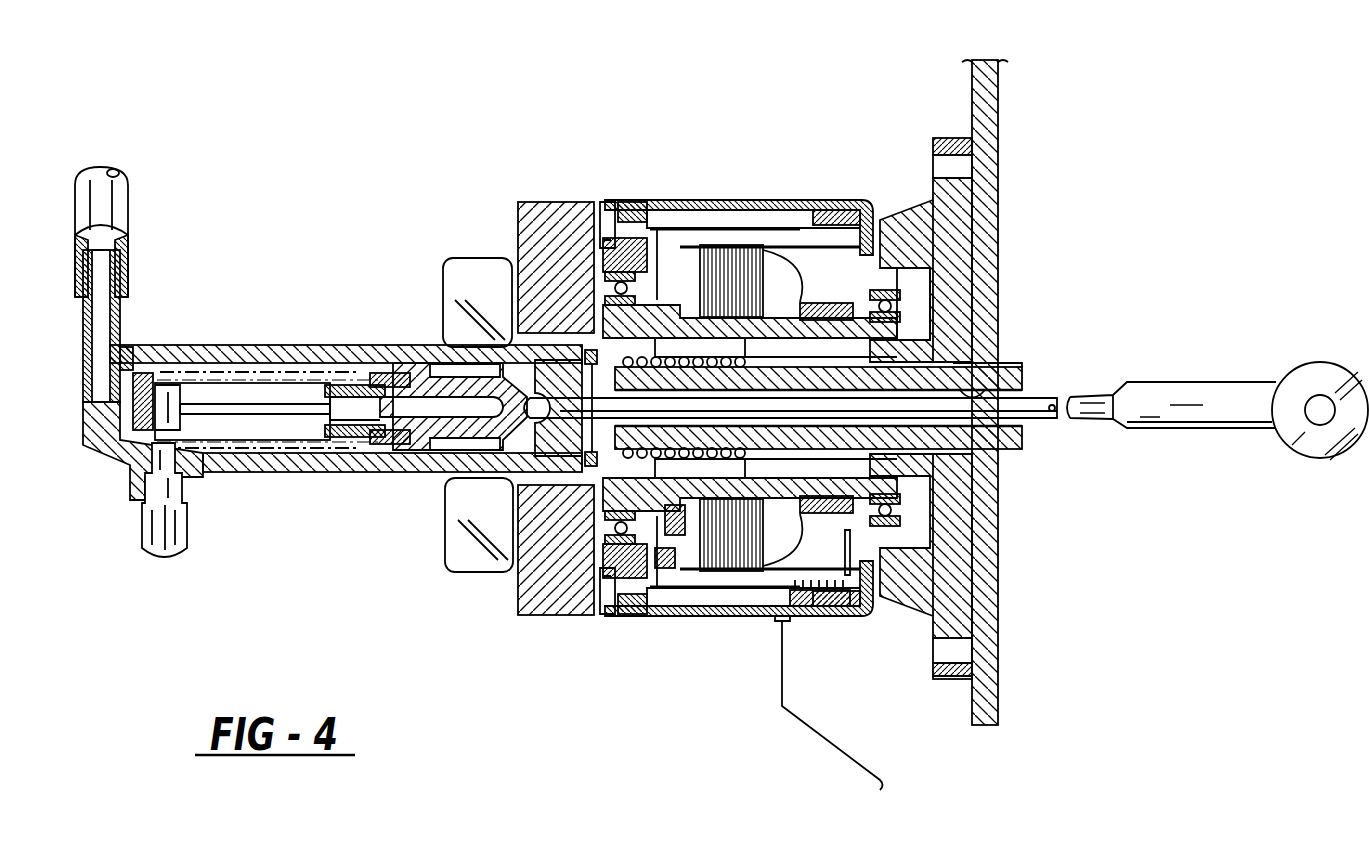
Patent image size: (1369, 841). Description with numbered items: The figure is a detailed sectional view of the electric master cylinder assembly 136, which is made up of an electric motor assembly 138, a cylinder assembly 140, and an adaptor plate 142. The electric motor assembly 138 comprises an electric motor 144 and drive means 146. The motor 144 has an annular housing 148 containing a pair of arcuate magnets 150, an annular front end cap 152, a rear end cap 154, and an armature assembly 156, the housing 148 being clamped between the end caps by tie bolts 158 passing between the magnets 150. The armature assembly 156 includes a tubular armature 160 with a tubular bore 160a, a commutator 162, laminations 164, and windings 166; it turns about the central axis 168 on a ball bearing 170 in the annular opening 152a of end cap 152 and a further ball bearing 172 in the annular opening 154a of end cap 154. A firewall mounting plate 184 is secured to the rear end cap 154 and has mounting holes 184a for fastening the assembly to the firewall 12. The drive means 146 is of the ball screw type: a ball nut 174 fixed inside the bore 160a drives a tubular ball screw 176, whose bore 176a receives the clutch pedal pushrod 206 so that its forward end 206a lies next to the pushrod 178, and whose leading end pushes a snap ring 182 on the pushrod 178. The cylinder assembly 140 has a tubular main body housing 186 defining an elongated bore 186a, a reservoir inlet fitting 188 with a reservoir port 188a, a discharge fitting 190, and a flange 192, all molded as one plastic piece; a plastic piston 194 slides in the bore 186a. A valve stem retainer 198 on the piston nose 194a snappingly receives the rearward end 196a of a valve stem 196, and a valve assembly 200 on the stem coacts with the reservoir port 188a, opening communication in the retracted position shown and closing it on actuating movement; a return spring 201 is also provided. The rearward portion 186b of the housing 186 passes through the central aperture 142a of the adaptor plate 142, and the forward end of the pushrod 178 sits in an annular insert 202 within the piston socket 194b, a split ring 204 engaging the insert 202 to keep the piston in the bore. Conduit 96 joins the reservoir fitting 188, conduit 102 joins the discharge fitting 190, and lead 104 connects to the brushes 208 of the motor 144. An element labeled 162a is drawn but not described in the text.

The firewall 12 is at (1000, 115).
The conduit 96 is at (125, 195).
The conduit 102 is at (150, 537).
The lead 104 is at (837, 757).
The master cylinder assembly 136 is at (583, 152).
The electric motor assembly 138 is at (740, 128).
The cylinder assembly 140 is at (330, 245).
The adaptor plate 142 is at (518, 202).
The central aperture 142a is at (560, 450).
The electric motor 144 is at (648, 198).
The drive means 146 is at (701, 338).
The annular housing 148 is at (787, 200).
The arcuate magnets 150 is at (737, 613).
The annular front end cap 152 is at (640, 600).
The annular opening 152a is at (662, 612).
The rear end cap 154 is at (867, 615).
The annular opening 154a is at (905, 512).
The armature assembly 156 is at (802, 262).
The tie bolts 158 is at (805, 232).
The tubular armature 160 is at (690, 300).
The tubular bore 160a is at (600, 498).
The commutator 162 is at (920, 280).
The housing extension 162a is at (373, 432).
The laminations 164 is at (750, 250).
The windings 166 is at (767, 598).
The central axis 168 is at (1098, 420).
The ball bearing 170 is at (600, 290).
The ball bearing 172 is at (905, 300).
The ball nut 174 is at (655, 250).
The ball screw 176 is at (1022, 380).
The tubular bore 176a is at (1013, 365).
The pushrod 178 is at (790, 407).
The snap ring 182 is at (560, 485).
The firewall mounting plate 184 is at (970, 600).
The mounting holes 184a is at (970, 657).
The tubular main body housing 186 is at (300, 347).
The elongated bore 186a is at (330, 372).
The rearward portion 186b is at (545, 353).
The reservoir inlet fitting 188 is at (123, 307).
The reservoir port 188a is at (90, 412).
The discharge fitting 190 is at (132, 487).
The flange 192 is at (488, 213).
The piston 194 is at (450, 472).
The nose 194a is at (373, 380).
The blind bore or socket 194b is at (543, 421).
The valve stem 196 is at (247, 407).
The rearward end 196a is at (357, 430).
The valve stem retainer 198 is at (320, 422).
The valve assembly 200 is at (167, 384).
The return spring 201 is at (257, 380).
The annular insert 202 is at (530, 393).
The split ring 204 is at (608, 450).
The pushrod 206 is at (1040, 425).
The forward end 206a is at (805, 390).
The brushes 208 is at (807, 600).